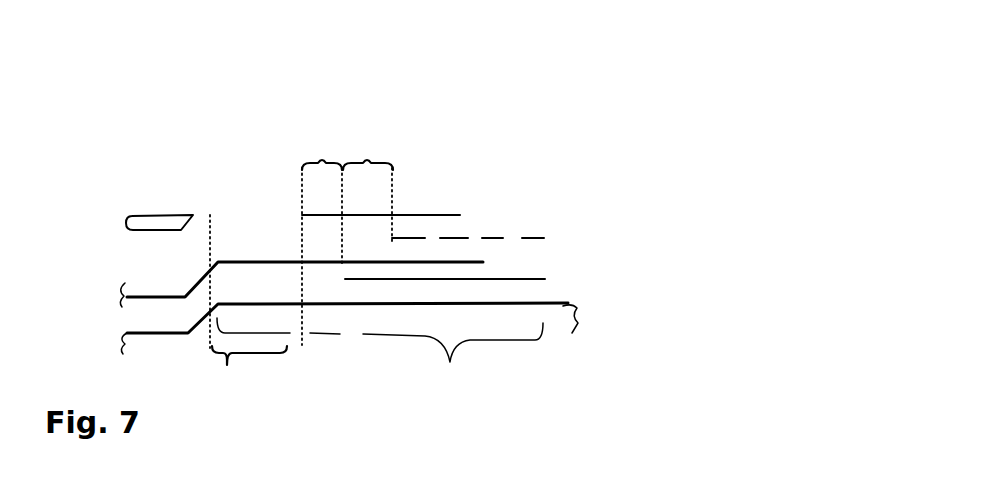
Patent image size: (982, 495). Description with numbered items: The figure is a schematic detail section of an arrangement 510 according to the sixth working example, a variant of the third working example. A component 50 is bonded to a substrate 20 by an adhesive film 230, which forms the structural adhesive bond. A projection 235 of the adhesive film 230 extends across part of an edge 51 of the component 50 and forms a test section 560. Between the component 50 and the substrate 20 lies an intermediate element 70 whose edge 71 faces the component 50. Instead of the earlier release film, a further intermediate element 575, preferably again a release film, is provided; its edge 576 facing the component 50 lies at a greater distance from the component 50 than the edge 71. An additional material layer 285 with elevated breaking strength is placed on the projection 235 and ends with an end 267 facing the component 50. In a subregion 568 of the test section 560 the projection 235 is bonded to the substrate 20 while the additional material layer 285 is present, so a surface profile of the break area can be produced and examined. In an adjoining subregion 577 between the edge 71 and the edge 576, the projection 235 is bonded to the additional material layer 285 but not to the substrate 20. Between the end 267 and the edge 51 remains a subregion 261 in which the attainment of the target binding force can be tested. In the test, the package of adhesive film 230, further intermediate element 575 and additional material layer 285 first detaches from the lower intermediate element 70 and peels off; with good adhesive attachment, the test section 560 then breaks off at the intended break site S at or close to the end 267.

The substrate 20 is at (565, 308).
The component 50 is at (167, 223).
The edge of component 51 is at (200, 224).
The intermediate element 70 is at (527, 279).
The edge of the intermediate element 71 is at (332, 297).
The adhesive film 230 is at (233, 262).
The projection of the adhesive film 235 is at (278, 227).
The subregion of the test section 261 is at (227, 365).
The end of the subarea 267 is at (286, 200).
The additional material layer 285 is at (420, 210).
The arrangement 510 is at (551, 140).
The test section 560 is at (380, 362).
The subregion of the test section 568 is at (318, 160).
The further intermediate element 575 is at (530, 238).
The edge of the further intermediate element 576 is at (380, 255).
The subregion 577 is at (370, 158).
The intended break site S is at (287, 268).